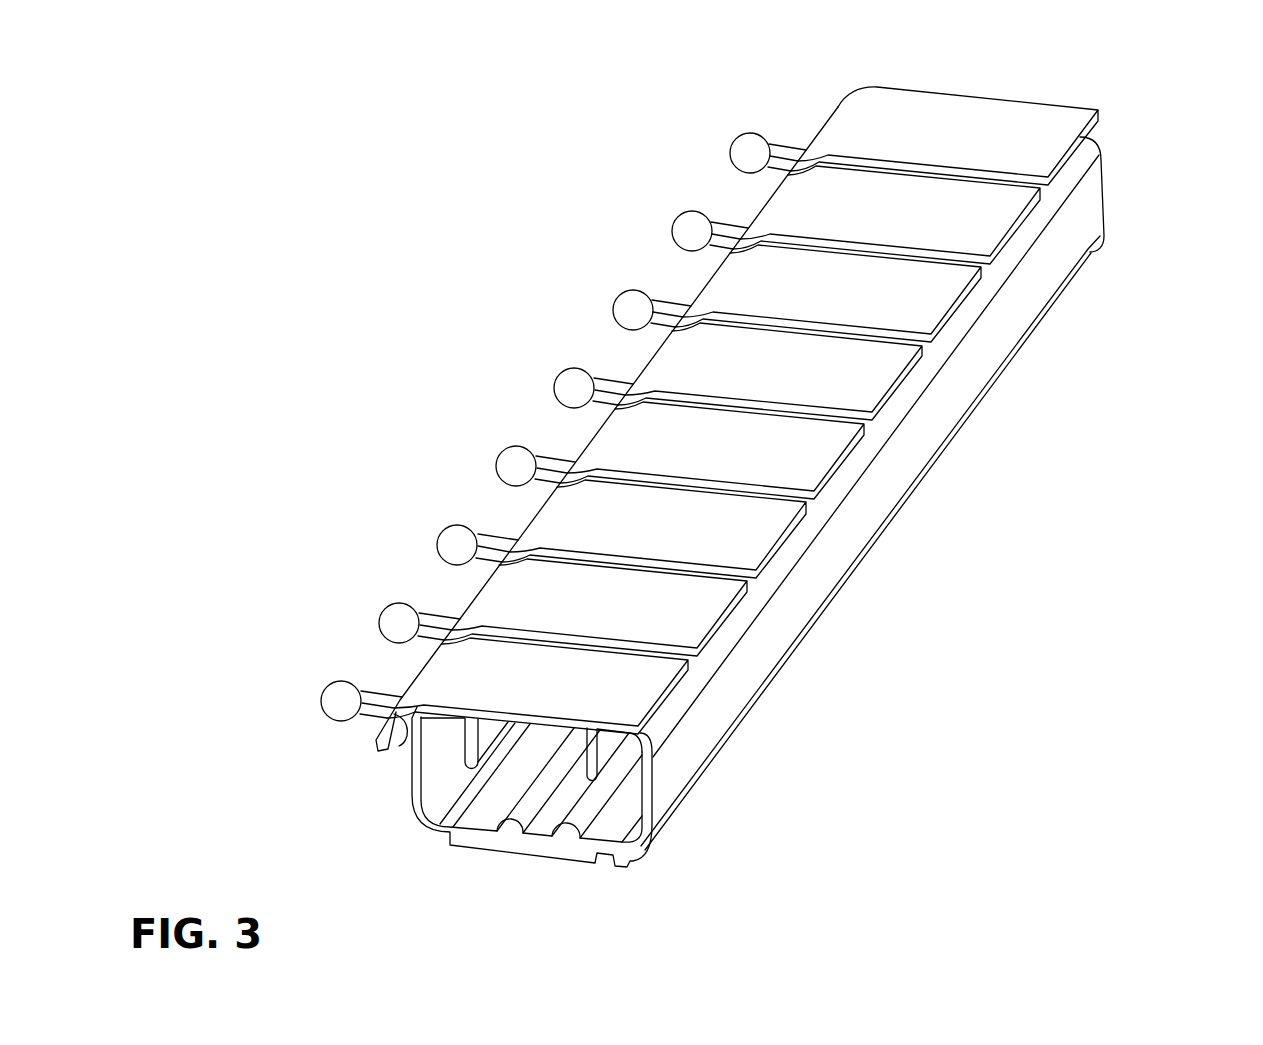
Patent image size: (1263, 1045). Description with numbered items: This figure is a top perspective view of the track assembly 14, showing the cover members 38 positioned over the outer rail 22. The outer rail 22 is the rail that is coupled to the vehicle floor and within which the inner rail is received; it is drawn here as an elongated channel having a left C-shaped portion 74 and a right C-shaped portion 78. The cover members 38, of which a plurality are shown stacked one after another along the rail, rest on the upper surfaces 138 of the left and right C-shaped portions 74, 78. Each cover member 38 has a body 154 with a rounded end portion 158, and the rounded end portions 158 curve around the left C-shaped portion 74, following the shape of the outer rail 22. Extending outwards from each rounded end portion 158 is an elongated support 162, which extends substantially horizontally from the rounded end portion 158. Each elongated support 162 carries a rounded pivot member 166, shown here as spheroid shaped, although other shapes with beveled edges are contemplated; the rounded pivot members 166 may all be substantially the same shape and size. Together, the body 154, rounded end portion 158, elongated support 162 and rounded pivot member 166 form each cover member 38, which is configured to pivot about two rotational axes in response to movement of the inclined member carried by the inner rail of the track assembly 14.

The track assembly 14 is at (1179, 138).
The outer rail 22 is at (737, 687).
The cover members 38 is at (962, 142).
The left C-shaped portion 74 is at (413, 787).
The right C-shaped portion 78 is at (707, 722).
The upper surfaces 138 is at (640, 740).
The body 154 is at (533, 675).
The rounded end portion 158 is at (380, 735).
The elongated support 162 is at (787, 162).
The rounded pivot member 166 is at (402, 630).